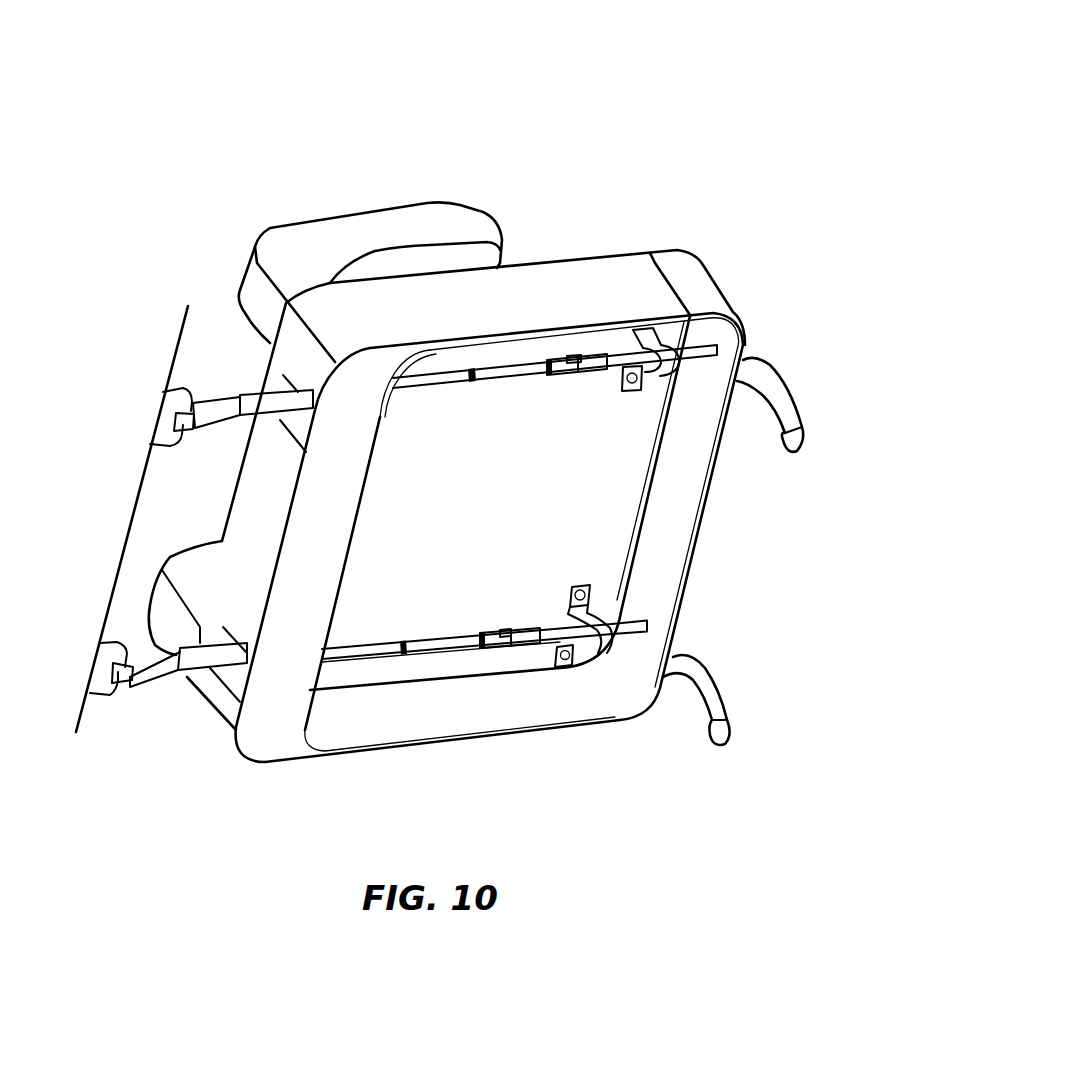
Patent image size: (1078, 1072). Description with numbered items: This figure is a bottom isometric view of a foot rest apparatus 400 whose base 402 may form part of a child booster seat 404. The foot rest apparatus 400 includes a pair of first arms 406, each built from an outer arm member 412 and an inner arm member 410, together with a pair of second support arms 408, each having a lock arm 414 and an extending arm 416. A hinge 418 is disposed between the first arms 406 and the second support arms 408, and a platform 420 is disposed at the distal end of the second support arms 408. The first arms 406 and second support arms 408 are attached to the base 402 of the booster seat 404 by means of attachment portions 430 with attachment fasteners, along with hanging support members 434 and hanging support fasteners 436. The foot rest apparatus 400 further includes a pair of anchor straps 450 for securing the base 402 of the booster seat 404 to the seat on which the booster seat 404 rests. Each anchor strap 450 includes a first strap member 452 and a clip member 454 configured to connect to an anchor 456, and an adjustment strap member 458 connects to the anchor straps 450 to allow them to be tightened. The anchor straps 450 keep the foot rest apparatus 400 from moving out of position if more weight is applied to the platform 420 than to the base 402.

The foot rest apparatus 400 is at (644, 94).
The base 402 is at (367, 676).
The child booster seat 404 is at (380, 227).
The first arms 406 is at (498, 372).
The second support arms 408 is at (623, 352).
The inner arm member 410 is at (387, 650).
The outer arm member 412 is at (460, 643).
The lock arm 414 is at (680, 312).
The extending arm 416 is at (645, 615).
The hinge 418 is at (571, 358).
The platform 420 is at (688, 515).
The attachment portions 430 is at (322, 662).
The hanging support members 434 is at (590, 637).
The hanging support fasteners 436 is at (557, 673).
The anchor straps 450 is at (175, 692).
The first strap member 452 is at (255, 397).
The clip member 454 is at (250, 420).
The anchor 456 is at (165, 444).
The adjustment strap member 458 is at (779, 398).